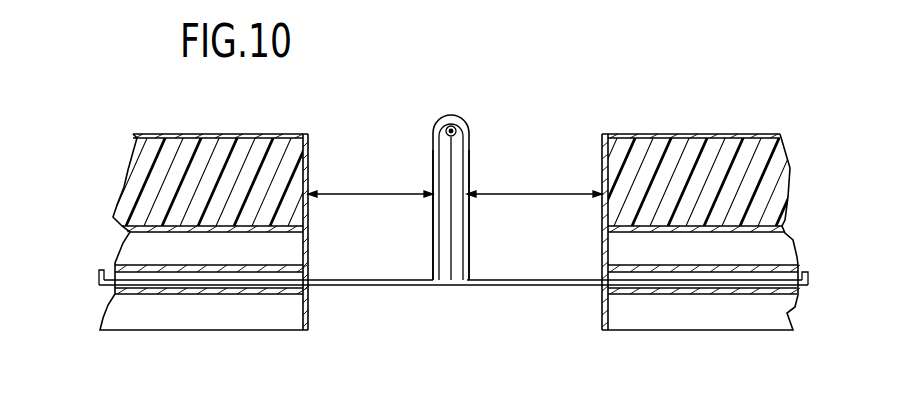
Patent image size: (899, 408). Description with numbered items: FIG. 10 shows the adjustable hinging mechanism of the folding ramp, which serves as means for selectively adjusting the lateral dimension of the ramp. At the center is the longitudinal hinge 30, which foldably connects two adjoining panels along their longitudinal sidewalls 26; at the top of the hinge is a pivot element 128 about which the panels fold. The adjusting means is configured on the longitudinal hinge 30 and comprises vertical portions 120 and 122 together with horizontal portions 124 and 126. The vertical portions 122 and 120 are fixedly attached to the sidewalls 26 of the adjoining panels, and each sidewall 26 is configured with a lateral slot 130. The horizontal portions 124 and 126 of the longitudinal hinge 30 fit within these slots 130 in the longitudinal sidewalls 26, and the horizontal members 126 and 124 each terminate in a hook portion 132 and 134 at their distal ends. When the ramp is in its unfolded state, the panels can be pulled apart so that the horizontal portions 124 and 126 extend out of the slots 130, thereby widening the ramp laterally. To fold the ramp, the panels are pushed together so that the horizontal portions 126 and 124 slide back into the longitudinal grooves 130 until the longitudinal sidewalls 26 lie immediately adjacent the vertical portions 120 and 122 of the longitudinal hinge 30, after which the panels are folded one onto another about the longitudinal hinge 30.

The sidewall 26 is at (310, 152).
The longitudinal hinge 30 is at (447, 113).
The vertical portion 120 is at (466, 163).
The vertical portion 122 is at (437, 160).
The horizontal portion 124 is at (507, 279).
The horizontal portion 126 is at (372, 279).
The hinge pin 128 is at (456, 129).
The lateral slot 130 is at (247, 283).
The hook portion 132 is at (98, 283).
The hook portion 134 is at (810, 273).